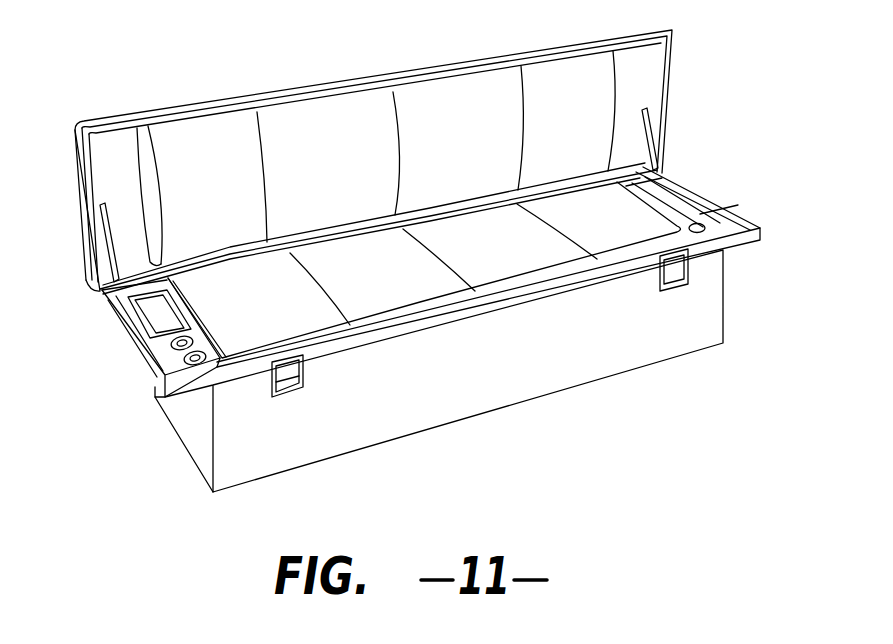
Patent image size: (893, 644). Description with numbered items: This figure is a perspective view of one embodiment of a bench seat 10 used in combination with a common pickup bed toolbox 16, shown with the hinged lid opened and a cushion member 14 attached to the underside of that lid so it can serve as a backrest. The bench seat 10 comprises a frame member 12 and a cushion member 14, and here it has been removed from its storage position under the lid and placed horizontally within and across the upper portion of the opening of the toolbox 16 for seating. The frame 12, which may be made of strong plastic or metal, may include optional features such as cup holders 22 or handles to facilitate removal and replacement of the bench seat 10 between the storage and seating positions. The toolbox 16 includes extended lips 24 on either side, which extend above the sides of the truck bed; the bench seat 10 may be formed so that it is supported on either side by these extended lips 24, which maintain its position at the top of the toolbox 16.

The bench seat 10 is at (421, 261).
The frame member 12 is at (170, 340).
The cushion member 14 is at (327, 127).
The toolbox 16 is at (660, 338).
The cup holders 22 is at (171, 348).
The extended lips 24 is at (113, 315).